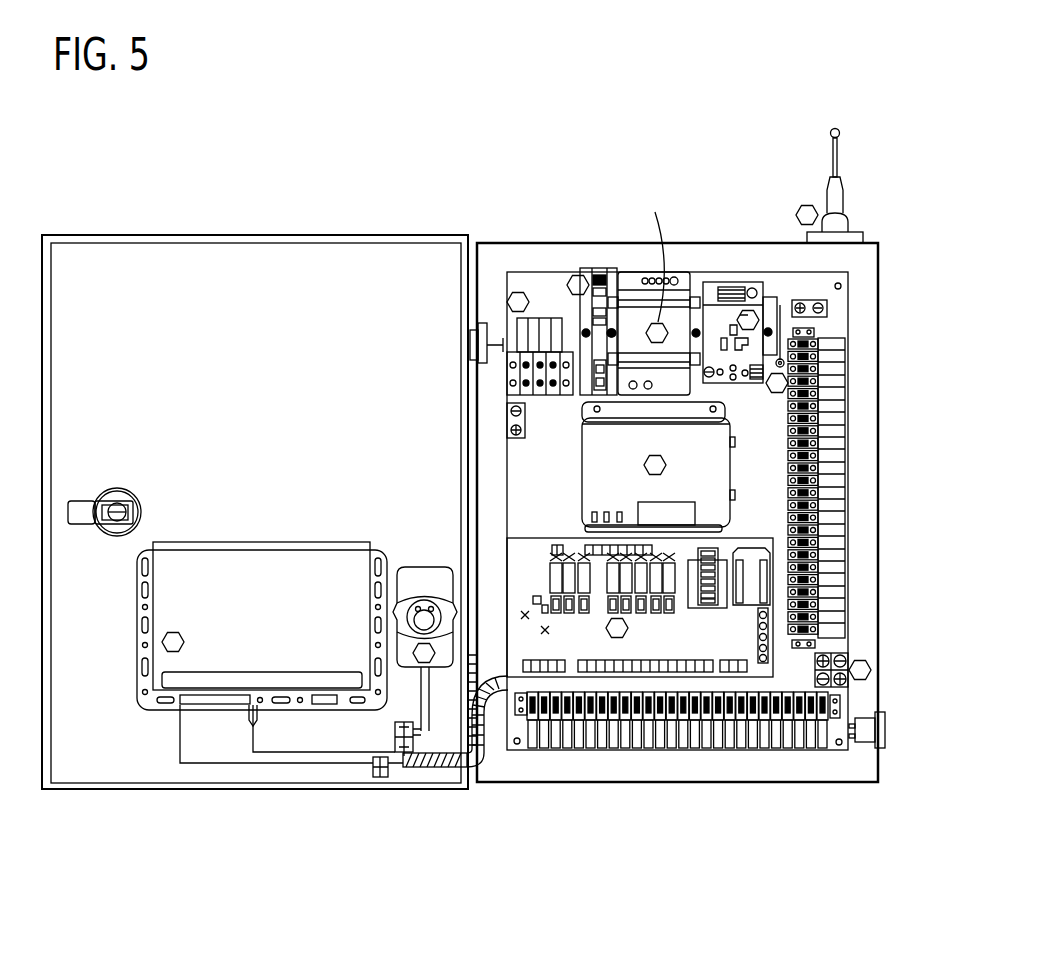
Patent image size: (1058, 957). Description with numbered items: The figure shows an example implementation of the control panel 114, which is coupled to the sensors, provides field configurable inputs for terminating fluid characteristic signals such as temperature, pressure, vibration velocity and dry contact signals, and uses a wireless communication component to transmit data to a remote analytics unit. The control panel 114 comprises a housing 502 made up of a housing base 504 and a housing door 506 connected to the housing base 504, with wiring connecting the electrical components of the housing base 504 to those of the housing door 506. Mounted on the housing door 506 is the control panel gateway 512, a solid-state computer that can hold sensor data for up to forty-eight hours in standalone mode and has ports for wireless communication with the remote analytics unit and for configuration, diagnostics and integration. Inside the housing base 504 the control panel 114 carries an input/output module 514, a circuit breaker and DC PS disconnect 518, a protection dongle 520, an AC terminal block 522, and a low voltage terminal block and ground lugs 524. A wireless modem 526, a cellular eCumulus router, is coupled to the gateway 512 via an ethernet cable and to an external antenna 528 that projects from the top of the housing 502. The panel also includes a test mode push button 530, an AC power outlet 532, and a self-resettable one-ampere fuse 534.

The control panel 114 is at (637, 108).
The housing 502 is at (501, 485).
The housing base 504 is at (678, 785).
The housing door 506 is at (257, 790).
The control panel gateway 512 is at (184, 636).
The input/output module 514 is at (630, 631).
The circuit breaker and DC PS disconnect 518 is at (598, 290).
The protection dongle 520 is at (415, 580).
The AC terminal block 522 is at (507, 379).
The low voltage terminal block and ground lugs 524 is at (850, 660).
The wireless modem 526 is at (645, 467).
The external antenna 528 is at (846, 212).
The test mode push button 530 is at (888, 727).
The AC power outlet 532 is at (746, 310).
The self-resettable 1A fuse 534 is at (782, 358).